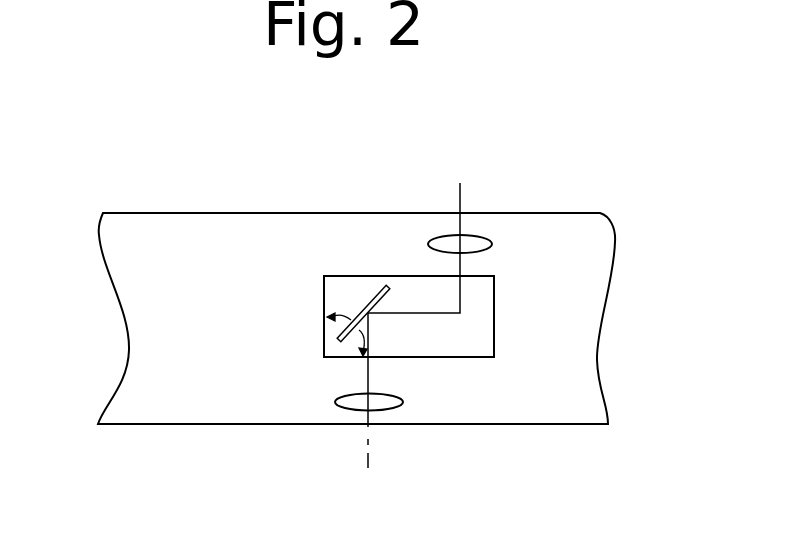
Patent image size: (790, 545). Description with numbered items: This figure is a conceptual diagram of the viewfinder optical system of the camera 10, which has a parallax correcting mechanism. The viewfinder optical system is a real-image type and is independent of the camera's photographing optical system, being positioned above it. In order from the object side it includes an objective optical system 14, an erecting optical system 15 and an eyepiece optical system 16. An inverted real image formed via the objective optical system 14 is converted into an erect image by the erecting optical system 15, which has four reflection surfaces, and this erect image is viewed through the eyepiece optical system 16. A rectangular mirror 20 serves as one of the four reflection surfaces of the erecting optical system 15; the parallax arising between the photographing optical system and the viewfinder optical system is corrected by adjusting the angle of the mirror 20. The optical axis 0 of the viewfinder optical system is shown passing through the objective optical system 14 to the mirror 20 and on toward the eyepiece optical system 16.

The camera 10 is at (162, 176).
The objective optical system 14 is at (387, 403).
The erecting optical system 15 is at (485, 297).
The eyepiece optical system 16 is at (478, 240).
The mirror 20 is at (380, 288).
The optical axis 0 is at (367, 373).